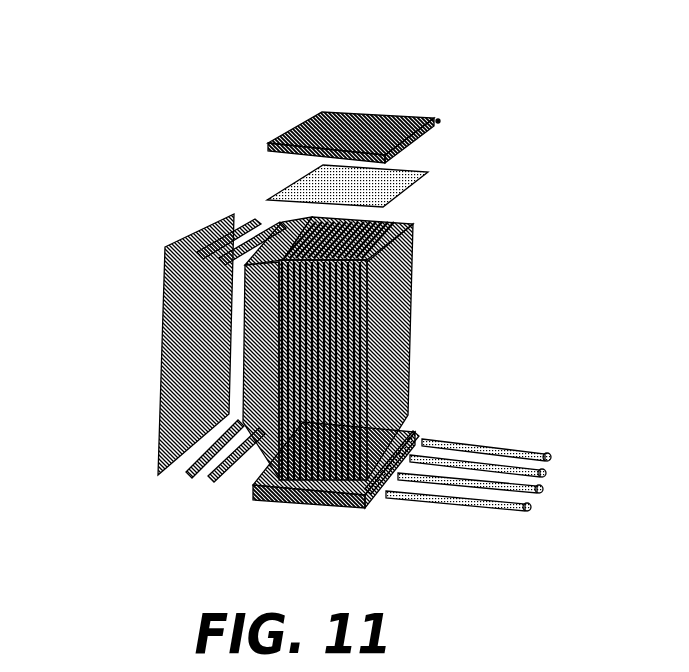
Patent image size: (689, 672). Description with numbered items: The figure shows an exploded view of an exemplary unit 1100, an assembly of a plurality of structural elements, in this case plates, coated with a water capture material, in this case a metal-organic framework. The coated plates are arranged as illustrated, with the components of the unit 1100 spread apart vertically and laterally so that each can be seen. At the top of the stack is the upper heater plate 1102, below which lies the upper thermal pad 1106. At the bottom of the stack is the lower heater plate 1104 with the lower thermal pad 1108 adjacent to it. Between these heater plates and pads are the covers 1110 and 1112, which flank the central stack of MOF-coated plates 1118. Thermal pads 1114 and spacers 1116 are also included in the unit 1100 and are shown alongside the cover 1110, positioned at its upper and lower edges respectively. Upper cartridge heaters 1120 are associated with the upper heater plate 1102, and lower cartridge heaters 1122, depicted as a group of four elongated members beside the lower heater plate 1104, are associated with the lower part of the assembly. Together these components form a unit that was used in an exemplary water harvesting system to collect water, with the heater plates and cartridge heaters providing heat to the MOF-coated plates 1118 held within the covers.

The unit 1100 is at (118, 96).
The upper heater plate 1102 is at (375, 100).
The lower heater plate 1104 is at (366, 517).
The upper thermal pad 1106 is at (412, 168).
The lower thermal pad 1108 is at (410, 430).
The cover 1110 is at (158, 296).
The cover 1112 is at (403, 275).
The thermal pads 1114 is at (245, 218).
The spacers 1116 is at (202, 477).
The MOF-coated plates 1118 is at (260, 425).
The upper cartridge heaters 1120 is at (440, 118).
The lower cartridge heaters 1122 is at (455, 440).